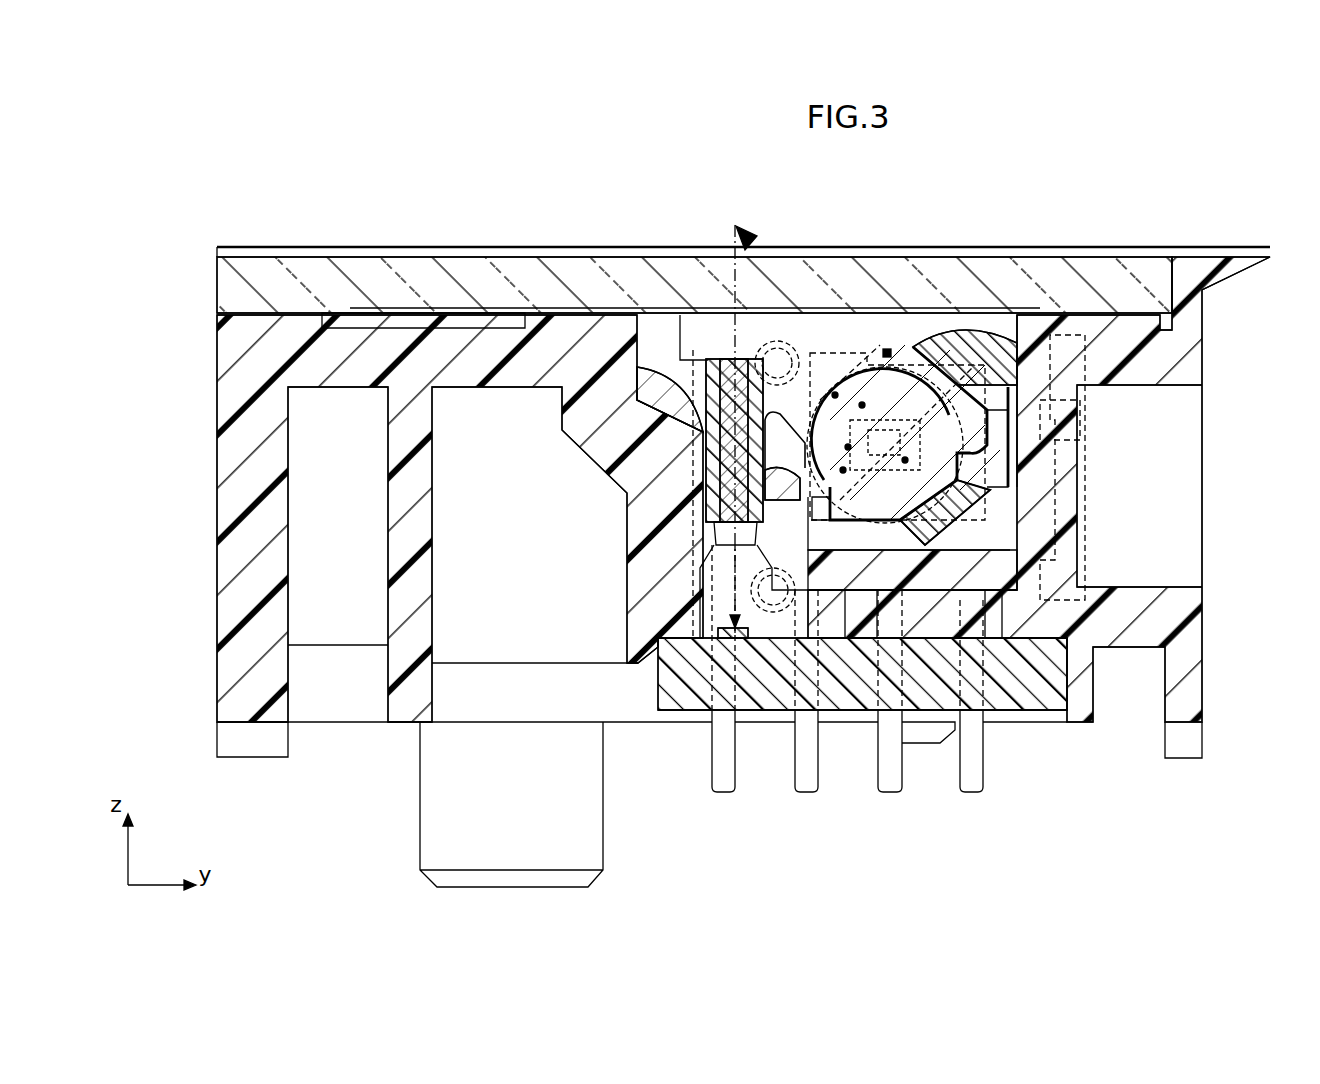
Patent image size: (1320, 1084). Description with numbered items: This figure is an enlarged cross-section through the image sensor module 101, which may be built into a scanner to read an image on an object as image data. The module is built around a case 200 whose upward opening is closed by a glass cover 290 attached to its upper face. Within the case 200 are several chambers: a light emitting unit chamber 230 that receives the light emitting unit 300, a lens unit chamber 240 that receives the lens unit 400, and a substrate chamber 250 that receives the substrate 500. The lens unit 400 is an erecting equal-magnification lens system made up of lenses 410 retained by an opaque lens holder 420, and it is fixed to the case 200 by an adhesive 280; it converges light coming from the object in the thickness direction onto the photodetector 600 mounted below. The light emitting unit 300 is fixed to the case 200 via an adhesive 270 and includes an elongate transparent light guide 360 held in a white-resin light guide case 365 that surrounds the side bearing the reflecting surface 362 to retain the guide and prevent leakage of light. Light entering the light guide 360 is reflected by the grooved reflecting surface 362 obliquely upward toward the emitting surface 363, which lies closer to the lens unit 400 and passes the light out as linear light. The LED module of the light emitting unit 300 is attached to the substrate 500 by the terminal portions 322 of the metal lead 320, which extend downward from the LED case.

The image sensor module 101 is at (697, 492).
The case 200 is at (455, 355).
The glass cover 290 is at (1095, 280).
The adhesive 280 is at (652, 372).
The lens unit chamber 240 is at (783, 417).
The lens unit 400 is at (694, 429).
The lens holder 420 is at (712, 362).
The lenses 410 is at (735, 362).
The light emitting unit 300 is at (930, 397).
The light guide 360 is at (905, 370).
The reflecting surface 362 is at (975, 345).
The emitting surface 363 is at (882, 350).
The light emitting unit chamber 230 is at (880, 352).
The adhesive 270 is at (1020, 335).
The light guide case 365 is at (1070, 412).
The substrate chamber 250 is at (1035, 680).
The substrate 500 is at (1000, 697).
The terminal portions 322 is at (847, 709).
The lead 320 is at (722, 792).
The photodetector 600 is at (722, 640).